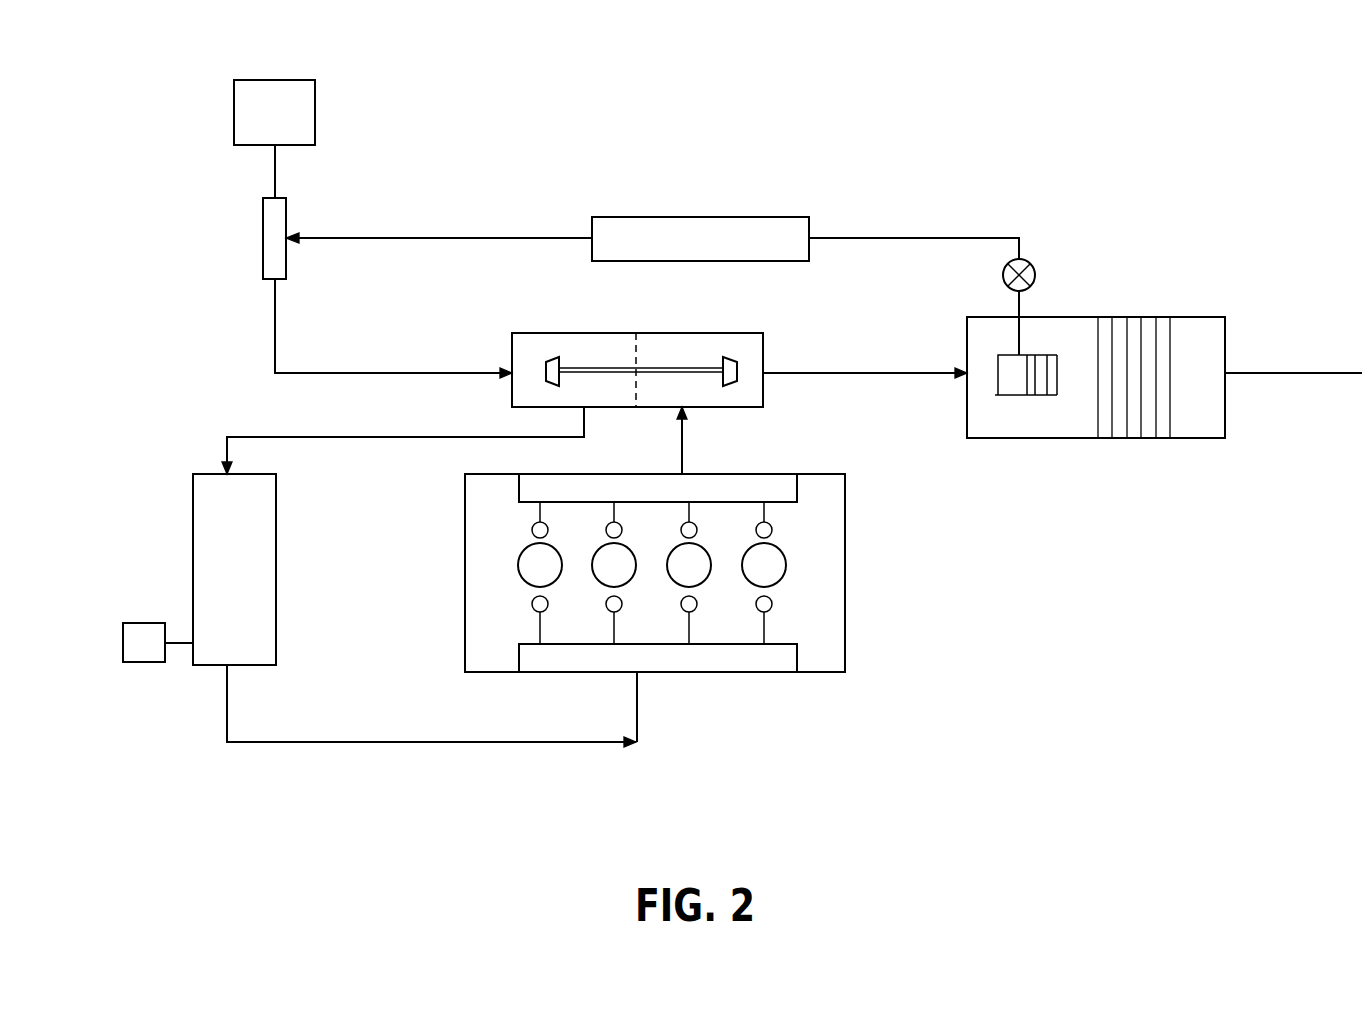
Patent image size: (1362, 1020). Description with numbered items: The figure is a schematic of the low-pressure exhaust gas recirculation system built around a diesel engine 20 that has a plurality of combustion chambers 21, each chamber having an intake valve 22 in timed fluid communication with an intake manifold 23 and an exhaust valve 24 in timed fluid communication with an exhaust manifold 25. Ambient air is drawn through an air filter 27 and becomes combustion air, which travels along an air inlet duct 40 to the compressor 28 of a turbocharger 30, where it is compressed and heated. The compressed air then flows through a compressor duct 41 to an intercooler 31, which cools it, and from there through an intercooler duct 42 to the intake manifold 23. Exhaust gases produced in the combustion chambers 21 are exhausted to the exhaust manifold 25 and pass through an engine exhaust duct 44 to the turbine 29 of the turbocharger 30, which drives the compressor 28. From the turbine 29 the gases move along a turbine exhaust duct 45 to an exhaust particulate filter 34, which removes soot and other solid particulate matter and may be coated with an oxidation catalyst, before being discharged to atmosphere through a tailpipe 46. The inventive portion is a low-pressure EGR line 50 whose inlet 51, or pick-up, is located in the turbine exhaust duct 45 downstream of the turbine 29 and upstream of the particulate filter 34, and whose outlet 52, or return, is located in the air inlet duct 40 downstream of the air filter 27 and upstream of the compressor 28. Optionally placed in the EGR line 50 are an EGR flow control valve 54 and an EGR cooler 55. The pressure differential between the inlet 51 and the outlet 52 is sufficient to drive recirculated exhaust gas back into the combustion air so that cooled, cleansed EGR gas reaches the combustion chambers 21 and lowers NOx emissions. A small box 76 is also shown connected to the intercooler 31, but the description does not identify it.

The diesel engine 20 is at (616, 578).
The combustion chamber 21 is at (518, 572).
The intake valve 22 is at (532, 607).
The intake manifold 23 is at (521, 657).
The exhaust valve 24 is at (532, 530).
The exhaust manifold 25 is at (519, 488).
The air filter 27 is at (234, 116).
The compressor 28 is at (535, 334).
The turbine 29 is at (727, 333).
The turbocharger 30 is at (636, 339).
The intercooler 31 is at (193, 555).
The exhaust particulate filter 34 is at (1123, 439).
The air inlet duct 40 is at (273, 351).
The compressor duct 41 is at (353, 435).
The intercooler duct 42 is at (372, 743).
The engine exhaust duct 44 is at (683, 445).
The turbine exhaust duct 45 is at (850, 370).
The tailpipe 46 is at (1329, 369).
The low-pressure EGR line 50 is at (520, 222).
The inlet 51 is at (1023, 353).
The outlet 52 is at (288, 234).
The EGR flow control valve 54 is at (1002, 273).
The EGR cooler 55 is at (682, 215).
The sensor 76 is at (147, 622).